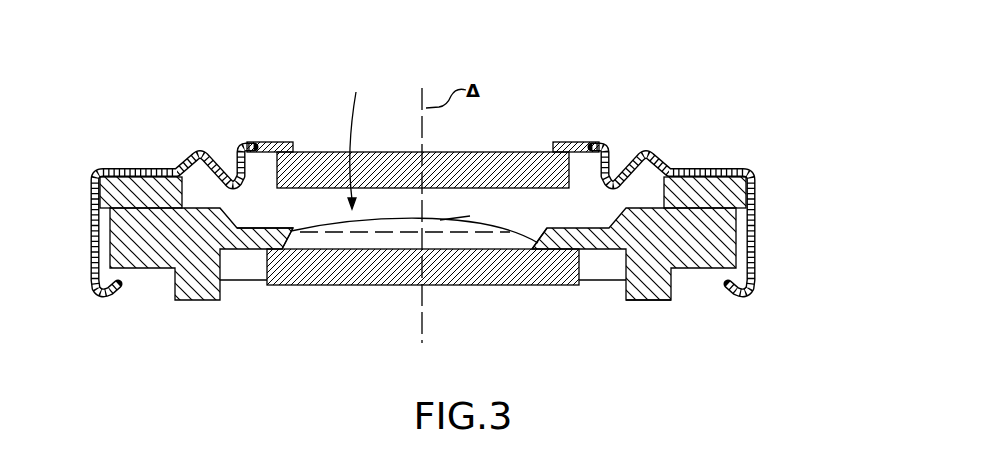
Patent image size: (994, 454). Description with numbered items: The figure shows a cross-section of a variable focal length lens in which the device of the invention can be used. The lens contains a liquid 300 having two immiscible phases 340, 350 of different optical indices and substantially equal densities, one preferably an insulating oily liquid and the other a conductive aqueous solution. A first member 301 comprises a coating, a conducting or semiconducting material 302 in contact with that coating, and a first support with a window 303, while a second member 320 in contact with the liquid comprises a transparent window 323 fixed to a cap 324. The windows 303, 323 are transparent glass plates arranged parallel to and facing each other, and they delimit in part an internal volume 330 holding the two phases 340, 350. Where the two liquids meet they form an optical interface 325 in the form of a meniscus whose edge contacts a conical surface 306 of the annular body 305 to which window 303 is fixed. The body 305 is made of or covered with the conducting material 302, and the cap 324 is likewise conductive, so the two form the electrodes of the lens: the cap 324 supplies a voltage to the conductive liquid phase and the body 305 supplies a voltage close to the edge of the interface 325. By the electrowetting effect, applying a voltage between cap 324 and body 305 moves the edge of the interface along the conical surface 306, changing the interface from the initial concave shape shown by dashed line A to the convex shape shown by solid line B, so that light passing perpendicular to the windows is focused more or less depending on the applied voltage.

The liquid 300 is at (414, 302).
The first member 301 is at (443, 314).
The conducting or semiconducting materials 302 is at (638, 248).
The window 303 is at (502, 262).
The body 305 is at (632, 335).
The conical surface 306 is at (300, 229).
The second member 320 is at (535, 52).
The transparent window 323 is at (503, 170).
The cap 324 is at (578, 141).
The optical interface 325 is at (312, 227).
The internal volume 330 is at (358, 136).
The immiscible phase 340 is at (356, 240).
The immiscible phase 350 is at (393, 203).
The dashed line A is at (537, 228).
The solid line B is at (440, 220).